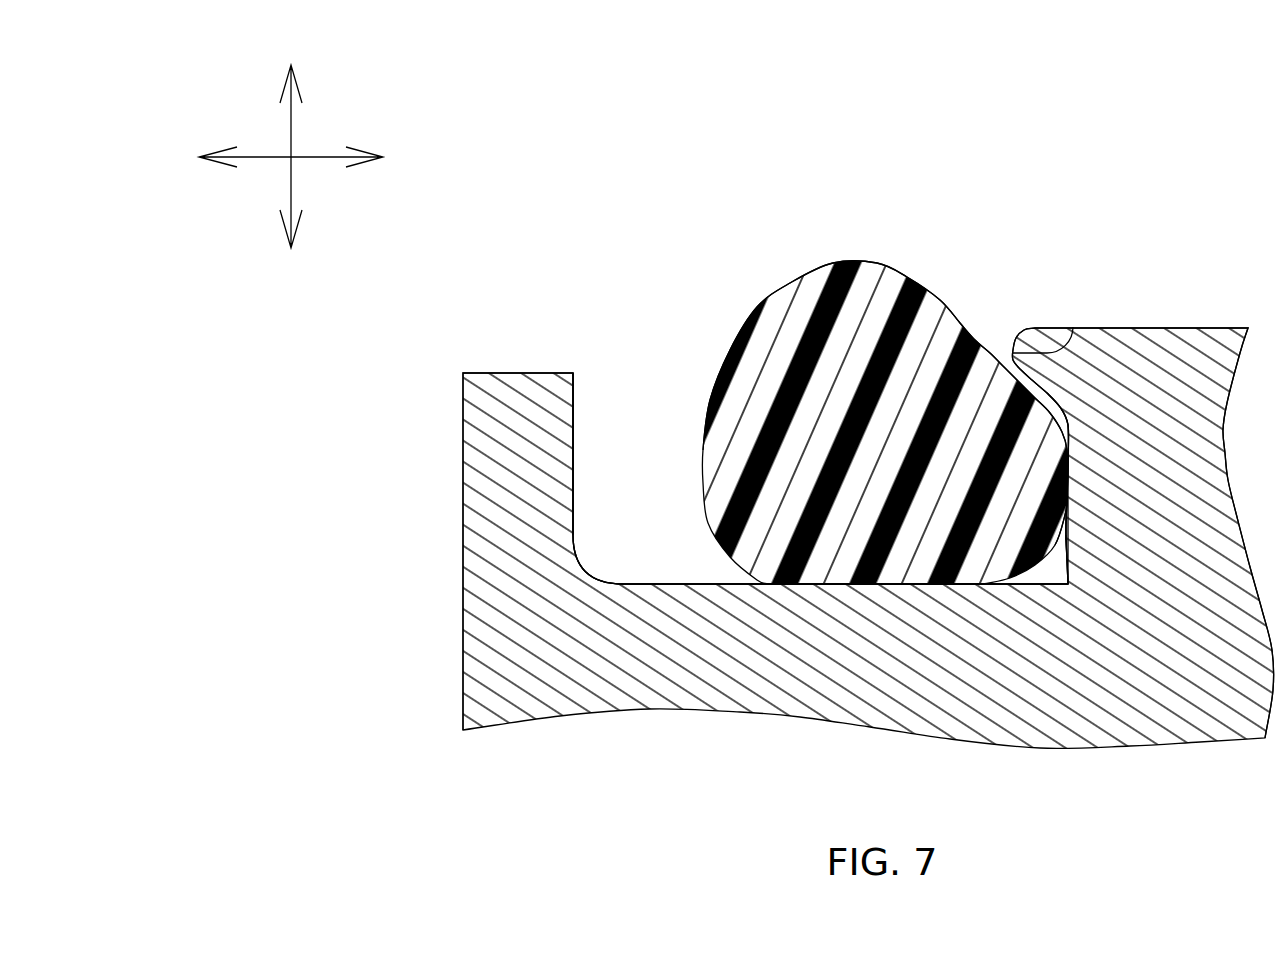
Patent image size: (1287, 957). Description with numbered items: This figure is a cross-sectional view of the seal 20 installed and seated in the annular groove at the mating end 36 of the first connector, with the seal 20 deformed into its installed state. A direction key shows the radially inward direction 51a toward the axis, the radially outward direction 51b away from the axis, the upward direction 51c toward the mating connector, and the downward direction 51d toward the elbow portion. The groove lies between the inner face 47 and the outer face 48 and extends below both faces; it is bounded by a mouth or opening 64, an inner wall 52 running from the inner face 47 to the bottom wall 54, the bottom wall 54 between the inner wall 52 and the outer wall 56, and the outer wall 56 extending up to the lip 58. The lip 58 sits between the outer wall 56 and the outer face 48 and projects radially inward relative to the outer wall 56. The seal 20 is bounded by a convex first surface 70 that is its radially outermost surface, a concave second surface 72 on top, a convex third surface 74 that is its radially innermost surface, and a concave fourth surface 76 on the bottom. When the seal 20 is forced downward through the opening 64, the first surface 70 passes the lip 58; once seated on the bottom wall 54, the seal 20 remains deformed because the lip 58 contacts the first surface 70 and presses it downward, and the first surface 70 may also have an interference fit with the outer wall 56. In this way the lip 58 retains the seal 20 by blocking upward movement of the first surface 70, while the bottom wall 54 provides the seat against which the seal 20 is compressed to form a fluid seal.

The seal 20 is at (752, 207).
The mating end 36 is at (1133, 718).
The inner face 47 is at (507, 373).
The outer face 48 is at (1185, 328).
The radially inward direction 51a is at (253, 157).
The radially outward direction 51b is at (325, 160).
The upward direction 51c is at (292, 121).
The downward direction 51d is at (291, 188).
The inner wall 52 is at (573, 433).
The bottom wall 54 is at (708, 585).
The outer wall 56 is at (1067, 508).
The lip 58 is at (1074, 327).
The mouth or opening 64 is at (645, 370).
The first surface 70 is at (1064, 548).
The second surface 72 is at (975, 338).
The third surface 74 is at (745, 336).
The fourth surface 76 is at (897, 585).